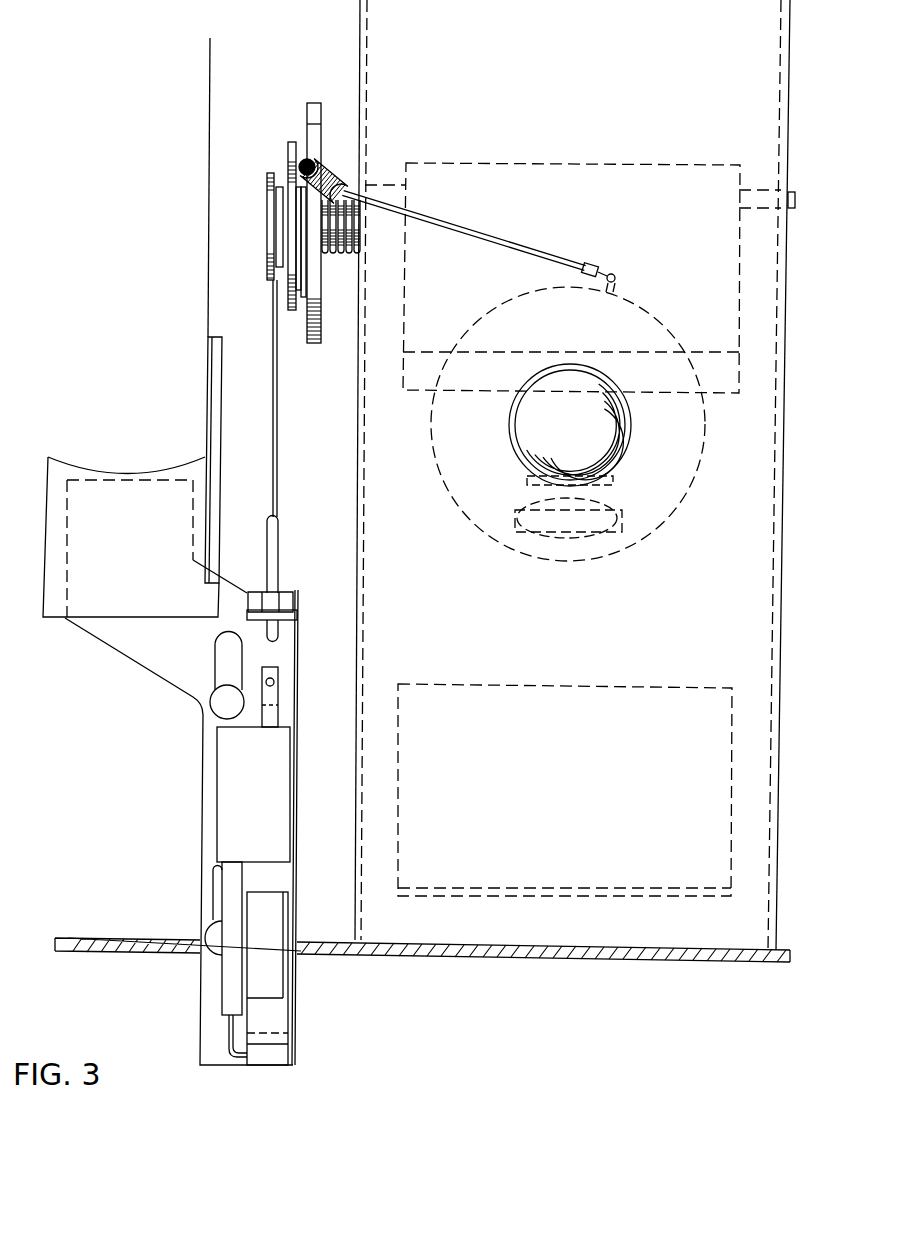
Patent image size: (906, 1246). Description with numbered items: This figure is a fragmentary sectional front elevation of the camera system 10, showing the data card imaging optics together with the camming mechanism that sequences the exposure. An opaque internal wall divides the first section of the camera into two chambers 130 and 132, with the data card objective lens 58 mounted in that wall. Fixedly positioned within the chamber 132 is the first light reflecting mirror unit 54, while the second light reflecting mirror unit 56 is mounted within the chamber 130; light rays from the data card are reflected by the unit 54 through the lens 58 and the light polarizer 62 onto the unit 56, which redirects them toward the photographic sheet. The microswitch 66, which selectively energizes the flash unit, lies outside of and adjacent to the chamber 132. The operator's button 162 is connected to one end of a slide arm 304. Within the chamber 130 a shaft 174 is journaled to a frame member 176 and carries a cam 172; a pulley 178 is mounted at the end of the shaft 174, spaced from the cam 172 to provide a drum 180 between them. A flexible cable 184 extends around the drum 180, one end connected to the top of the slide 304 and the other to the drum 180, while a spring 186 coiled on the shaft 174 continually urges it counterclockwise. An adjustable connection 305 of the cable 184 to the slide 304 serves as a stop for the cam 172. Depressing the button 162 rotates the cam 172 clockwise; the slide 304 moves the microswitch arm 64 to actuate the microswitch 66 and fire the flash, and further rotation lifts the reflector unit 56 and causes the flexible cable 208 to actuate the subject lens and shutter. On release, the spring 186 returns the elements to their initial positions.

The camera system 10 is at (196, 286).
The first light reflecting mirror unit 54 is at (498, 692).
The second light reflecting mirror unit 56 is at (403, 376).
The objective lens 58 is at (540, 540).
The light polarizer 62 is at (614, 482).
The microswitch arm 64 is at (222, 982).
The microswitch 66 is at (225, 767).
The chamber 130 is at (708, 589).
The chamber 132 is at (417, 667).
The button 162 is at (105, 468).
The cam 172 is at (311, 103).
The shaft 174 is at (345, 256).
The frame member 176 is at (358, 400).
The pulley 178 is at (270, 173).
The drum 180 is at (291, 142).
The flexible cable 184 is at (278, 480).
The spring 186 is at (360, 222).
The flexible cable 208 is at (512, 244).
The slide arm 304 is at (156, 658).
The adjustable connection 305 is at (279, 590).